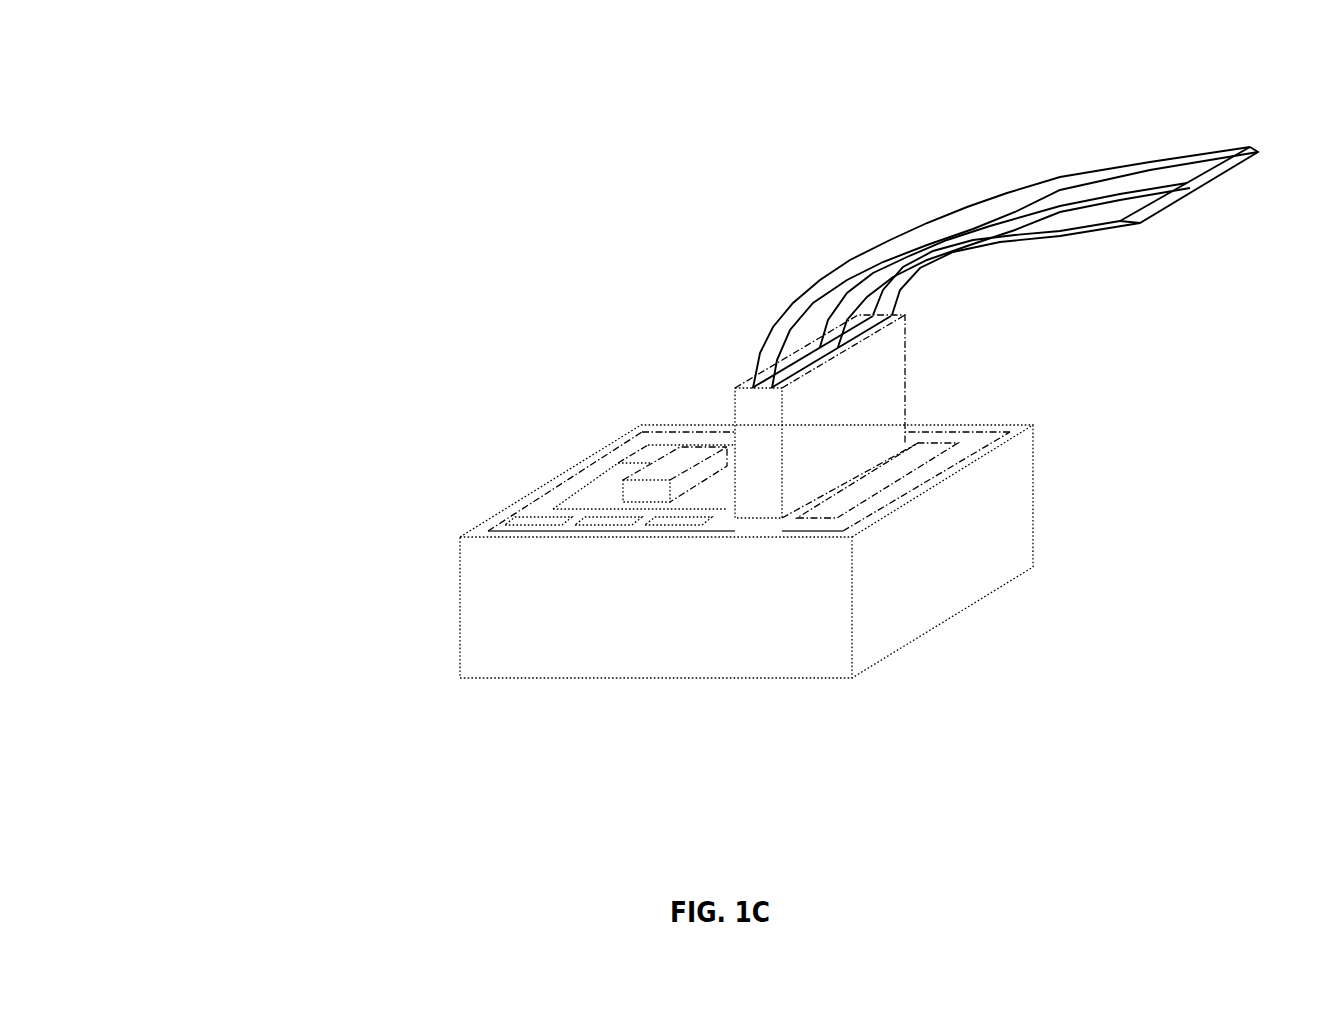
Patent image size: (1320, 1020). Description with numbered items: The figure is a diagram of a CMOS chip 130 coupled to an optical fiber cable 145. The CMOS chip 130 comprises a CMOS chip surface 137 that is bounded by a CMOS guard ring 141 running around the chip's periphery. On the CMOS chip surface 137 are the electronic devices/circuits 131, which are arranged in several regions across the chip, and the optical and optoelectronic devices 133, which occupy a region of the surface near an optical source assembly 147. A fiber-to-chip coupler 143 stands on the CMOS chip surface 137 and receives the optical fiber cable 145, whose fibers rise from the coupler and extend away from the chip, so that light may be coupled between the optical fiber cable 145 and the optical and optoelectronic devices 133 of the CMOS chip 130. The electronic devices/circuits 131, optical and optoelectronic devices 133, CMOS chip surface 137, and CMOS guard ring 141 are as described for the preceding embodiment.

The CMOS chip 130 is at (312, 94).
The electronic devices/circuits 131 is at (675, 527).
The optical and optoelectronic devices 133 is at (590, 497).
The CMOS chip surface 137 is at (615, 480).
The CMOS guard ring 141 is at (1002, 492).
The fiber-to-chip coupler 143 is at (888, 350).
The optical fiber cable 145 is at (960, 210).
The optical source assembly 147 is at (687, 465).